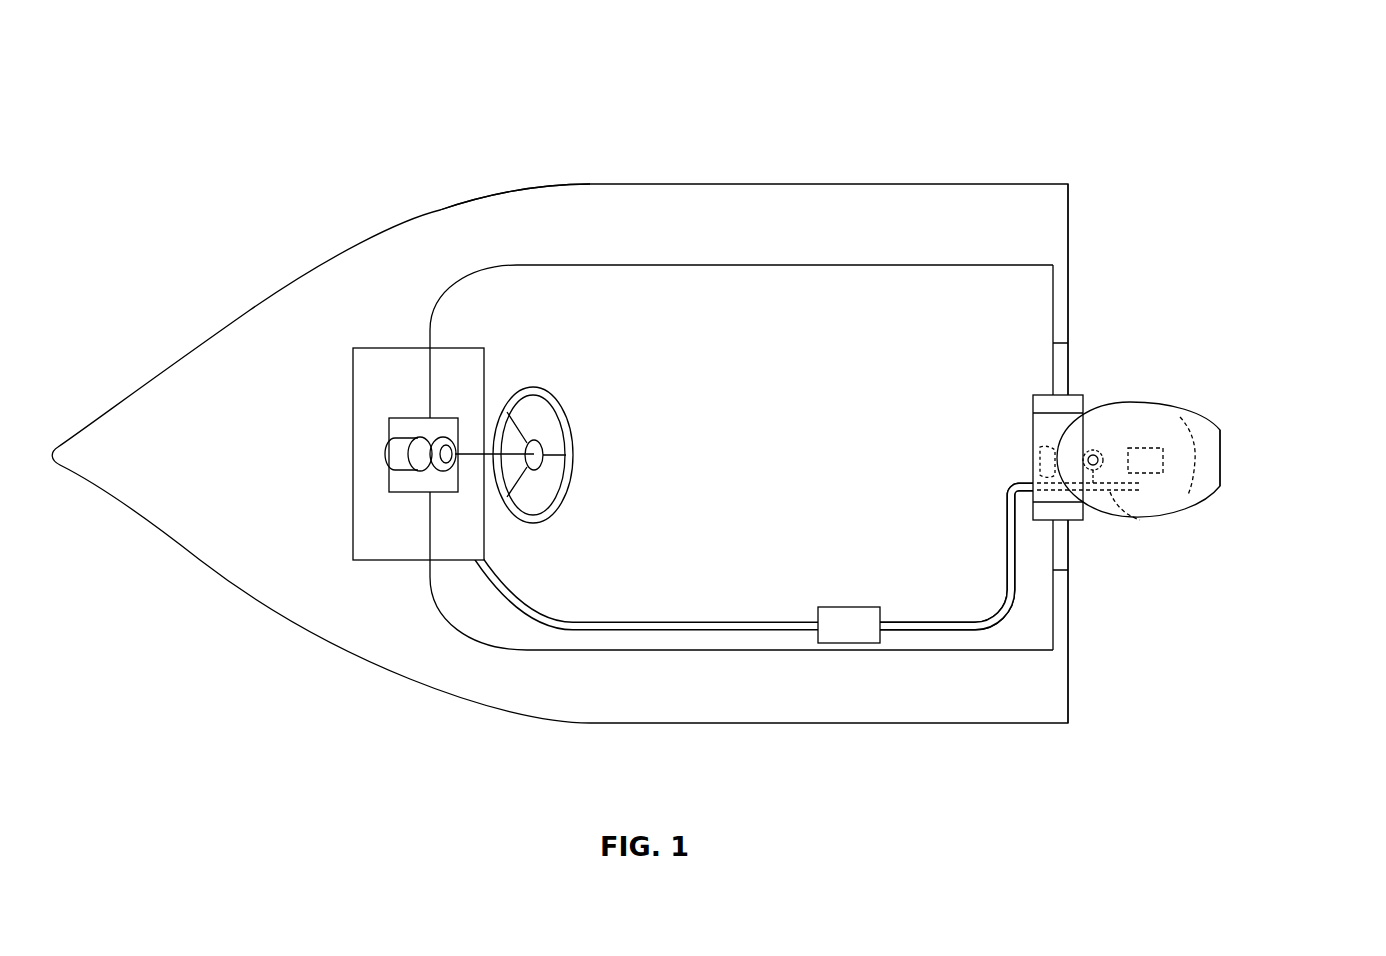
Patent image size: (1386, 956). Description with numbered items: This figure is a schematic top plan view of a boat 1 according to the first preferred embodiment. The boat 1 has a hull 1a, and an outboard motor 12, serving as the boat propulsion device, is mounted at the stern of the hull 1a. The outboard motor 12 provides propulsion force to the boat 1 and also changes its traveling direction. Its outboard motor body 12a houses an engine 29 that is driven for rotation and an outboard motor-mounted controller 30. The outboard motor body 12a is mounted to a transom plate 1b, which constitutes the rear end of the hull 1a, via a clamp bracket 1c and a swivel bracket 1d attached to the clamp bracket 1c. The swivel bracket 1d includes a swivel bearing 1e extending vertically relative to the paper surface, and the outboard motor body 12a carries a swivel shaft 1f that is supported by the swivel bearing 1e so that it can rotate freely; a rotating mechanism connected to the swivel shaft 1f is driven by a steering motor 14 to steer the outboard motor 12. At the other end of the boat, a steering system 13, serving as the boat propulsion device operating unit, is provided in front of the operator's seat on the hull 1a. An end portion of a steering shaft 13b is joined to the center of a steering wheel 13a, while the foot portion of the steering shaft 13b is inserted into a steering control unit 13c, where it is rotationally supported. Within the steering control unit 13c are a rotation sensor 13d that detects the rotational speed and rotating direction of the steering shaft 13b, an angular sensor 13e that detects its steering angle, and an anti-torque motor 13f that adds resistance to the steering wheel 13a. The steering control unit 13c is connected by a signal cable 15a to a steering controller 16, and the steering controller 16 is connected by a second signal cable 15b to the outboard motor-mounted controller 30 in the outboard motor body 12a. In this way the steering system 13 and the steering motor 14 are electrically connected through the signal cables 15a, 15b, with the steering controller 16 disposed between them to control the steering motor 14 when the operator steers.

The boat 1 is at (762, 184).
The hull 1a is at (690, 184).
The transom plate 1b is at (1070, 285).
The clamp bracket 1c is at (1070, 397).
The swivel bracket 1d is at (1033, 410).
The swivel bearing 1e is at (1094, 450).
The swivel shaft 1f is at (1093, 490).
The outboard motor 12 is at (1214, 421).
The outboard motor body 12a is at (1220, 445).
The steering system 13 is at (412, 307).
The steering wheel 13a is at (539, 322).
The steering shaft 13b is at (472, 450).
The steering control unit 13c is at (352, 375).
The rotation sensor 13d is at (433, 440).
The angular sensor 13e is at (418, 438).
The anti-torque motor 13f is at (397, 416).
The steering motor 14 is at (1038, 462).
The signal cable 15a is at (720, 632).
The signal cable 15b is at (947, 632).
The steering controller 16 is at (851, 645).
The engine 29 is at (1195, 480).
The outboard motor-mounted controller 30 is at (1150, 447).